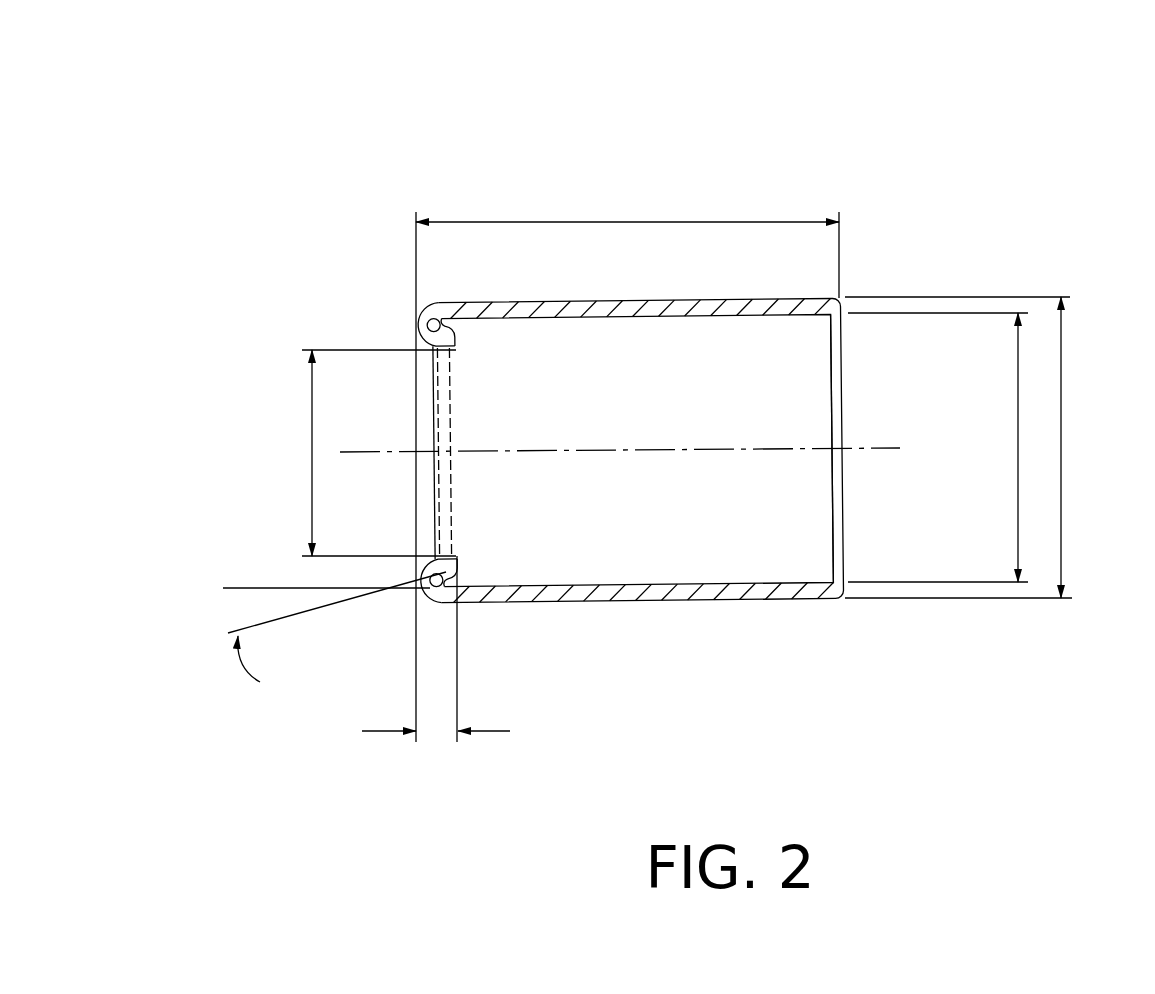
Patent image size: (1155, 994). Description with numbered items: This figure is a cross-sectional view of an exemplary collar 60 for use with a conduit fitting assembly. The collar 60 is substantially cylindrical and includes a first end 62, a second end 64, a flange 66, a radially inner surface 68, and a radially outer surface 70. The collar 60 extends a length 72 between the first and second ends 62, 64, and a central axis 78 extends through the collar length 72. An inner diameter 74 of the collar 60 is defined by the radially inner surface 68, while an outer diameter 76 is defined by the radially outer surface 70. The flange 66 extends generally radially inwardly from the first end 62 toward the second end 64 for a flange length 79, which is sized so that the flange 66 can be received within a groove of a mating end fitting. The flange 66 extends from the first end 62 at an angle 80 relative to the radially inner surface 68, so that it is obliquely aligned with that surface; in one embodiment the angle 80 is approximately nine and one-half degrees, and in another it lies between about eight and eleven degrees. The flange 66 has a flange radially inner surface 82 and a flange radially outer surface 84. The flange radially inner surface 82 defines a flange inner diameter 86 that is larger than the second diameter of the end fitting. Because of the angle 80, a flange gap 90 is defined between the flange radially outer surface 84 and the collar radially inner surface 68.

The collar 60 is at (1022, 110).
The first end 62 is at (400, 313).
The second end 64 is at (858, 596).
The flange 66 is at (457, 345).
The radially inner surface 68 is at (680, 585).
The radially outer surface 70 is at (645, 603).
The length 72 is at (634, 222).
The inner diameter 74 is at (1017, 453).
The outer diameter 76 is at (1062, 440).
The central axis 78 is at (870, 447).
The flange length 79 is at (497, 731).
The angle 80 is at (233, 588).
The flange radially inner surface 82 is at (437, 355).
The flange radially outer surface 84 is at (437, 313).
The flange inner diameter 86 is at (312, 426).
The flange gap 90 is at (455, 331).